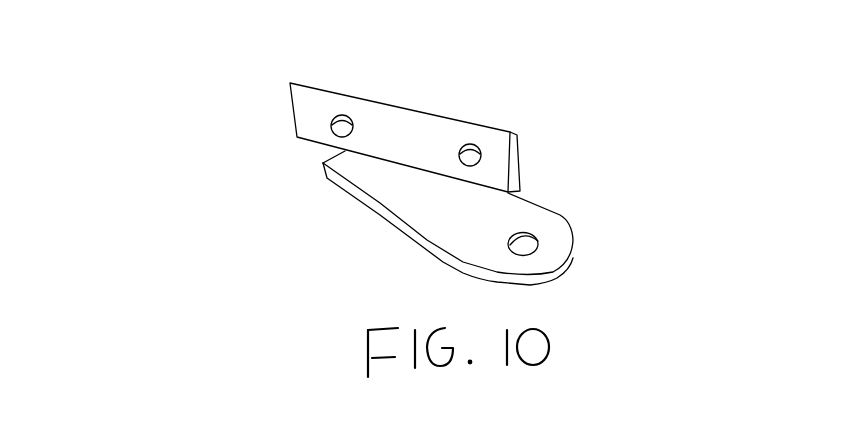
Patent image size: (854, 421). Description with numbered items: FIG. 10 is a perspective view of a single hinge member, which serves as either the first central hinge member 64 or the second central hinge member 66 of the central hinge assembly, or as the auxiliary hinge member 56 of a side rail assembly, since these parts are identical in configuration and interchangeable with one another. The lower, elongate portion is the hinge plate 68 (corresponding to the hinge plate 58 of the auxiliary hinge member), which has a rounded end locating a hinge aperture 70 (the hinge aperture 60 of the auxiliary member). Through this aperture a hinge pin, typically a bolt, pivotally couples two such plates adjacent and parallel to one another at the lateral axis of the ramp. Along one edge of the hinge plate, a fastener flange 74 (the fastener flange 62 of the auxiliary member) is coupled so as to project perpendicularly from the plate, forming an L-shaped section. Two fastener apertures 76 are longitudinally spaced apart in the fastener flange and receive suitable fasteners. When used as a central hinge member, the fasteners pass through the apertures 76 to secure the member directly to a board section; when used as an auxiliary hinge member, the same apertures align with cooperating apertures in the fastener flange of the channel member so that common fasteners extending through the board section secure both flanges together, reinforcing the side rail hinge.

The auxiliary hinge member 56 is at (391, 161).
The first central hinge member 64 is at (391, 161).
The second central hinge member 66 is at (242, 133).
The hinge plate 58 is at (507, 231).
The hinge plate 68 is at (446, 227).
The hinge aperture 60 is at (617, 263).
The hinge aperture 70 is at (533, 245).
The fastener flange 62 is at (442, 107).
The fastener flange 74 is at (427, 120).
The fastener apertures 76 is at (343, 114).